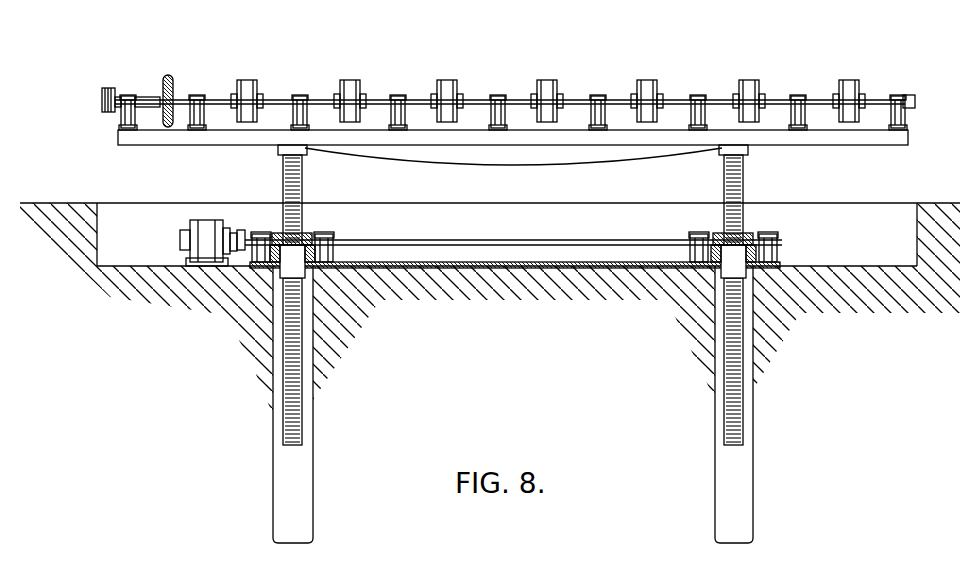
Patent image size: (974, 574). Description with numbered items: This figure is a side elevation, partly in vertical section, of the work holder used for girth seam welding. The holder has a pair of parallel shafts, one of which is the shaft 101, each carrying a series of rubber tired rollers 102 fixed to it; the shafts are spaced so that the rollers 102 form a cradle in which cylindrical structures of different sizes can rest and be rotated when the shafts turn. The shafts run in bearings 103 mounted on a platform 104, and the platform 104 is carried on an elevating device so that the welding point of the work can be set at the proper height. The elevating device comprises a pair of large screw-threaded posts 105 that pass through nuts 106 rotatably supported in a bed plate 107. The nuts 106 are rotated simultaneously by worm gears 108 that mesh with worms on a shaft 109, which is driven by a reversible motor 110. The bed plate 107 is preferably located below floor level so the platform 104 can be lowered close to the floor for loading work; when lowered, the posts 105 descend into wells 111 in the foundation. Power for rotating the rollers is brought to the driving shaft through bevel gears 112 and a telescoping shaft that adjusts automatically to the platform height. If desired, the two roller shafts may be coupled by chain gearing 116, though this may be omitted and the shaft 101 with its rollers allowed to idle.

The shaft 101 is at (178, 99).
The rubber tired rollers 102 is at (352, 80).
The bearings 103 is at (595, 94).
The platform 104 is at (135, 137).
The screw-threaded posts 105 is at (303, 182).
The nuts 106 is at (292, 258).
The bed plate 107 is at (498, 268).
The worm gears 108 is at (303, 236).
The shaft 109 is at (456, 242).
The reversible motor 110 is at (205, 226).
The wells 111 is at (137, 215).
The bevel gears 112 is at (165, 80).
The chain gearing 116 is at (103, 90).